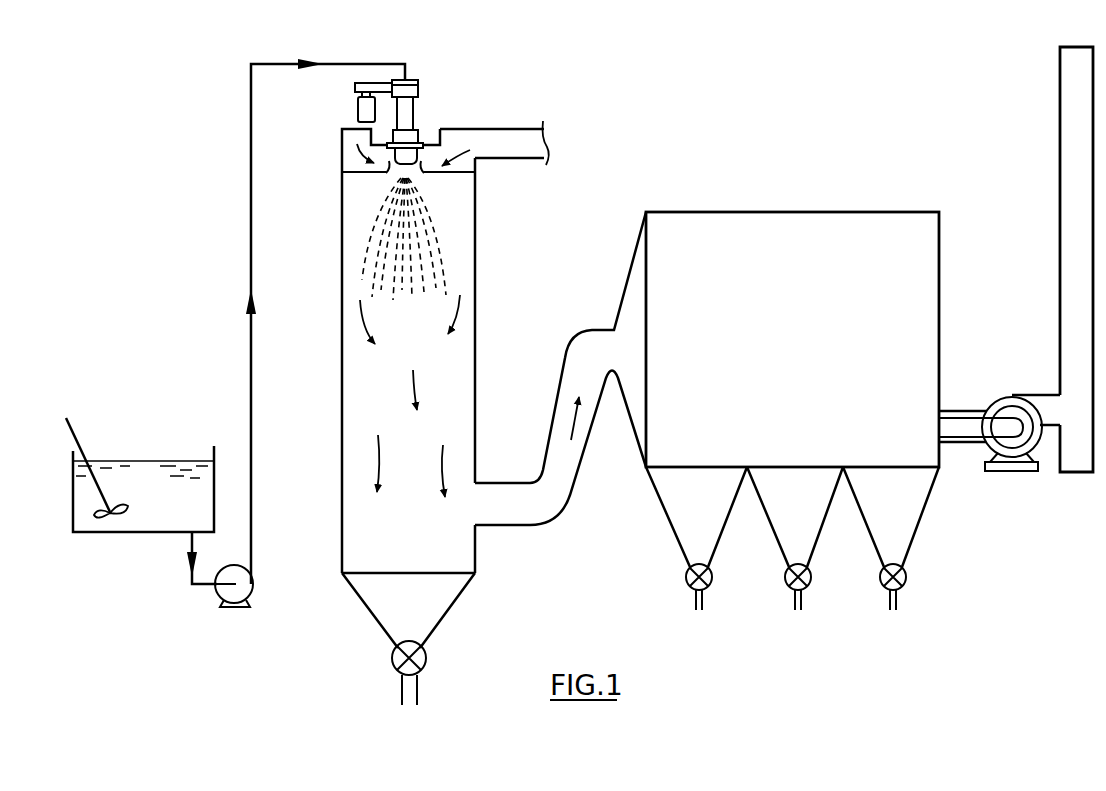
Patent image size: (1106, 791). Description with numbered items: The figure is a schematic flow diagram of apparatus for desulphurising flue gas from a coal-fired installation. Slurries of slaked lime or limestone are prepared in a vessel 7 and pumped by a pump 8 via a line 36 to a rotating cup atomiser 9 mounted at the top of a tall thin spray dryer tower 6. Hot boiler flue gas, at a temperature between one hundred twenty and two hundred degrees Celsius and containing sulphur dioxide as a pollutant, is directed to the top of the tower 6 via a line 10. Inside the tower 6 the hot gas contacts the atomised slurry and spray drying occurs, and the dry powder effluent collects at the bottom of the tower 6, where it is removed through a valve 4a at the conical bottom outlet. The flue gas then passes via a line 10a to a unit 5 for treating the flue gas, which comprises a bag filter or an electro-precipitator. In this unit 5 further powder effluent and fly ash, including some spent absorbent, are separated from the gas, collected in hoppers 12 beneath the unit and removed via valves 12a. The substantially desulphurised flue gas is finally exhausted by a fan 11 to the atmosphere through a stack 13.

The unit for treating the flue gas 5 is at (808, 220).
The spray dryer tower 6 is at (476, 232).
The vessel 7 is at (215, 470).
The pump 8 is at (254, 586).
The rotating cup atomiser 9 is at (430, 124).
The line 10 is at (512, 133).
The line 10a is at (535, 527).
The fan 11 is at (1004, 398).
The hoppers 12 is at (708, 516).
The valves 12a is at (926, 566).
The stack 13 is at (1059, 178).
The line 36 is at (250, 250).
The discharge valve 4a is at (426, 652).